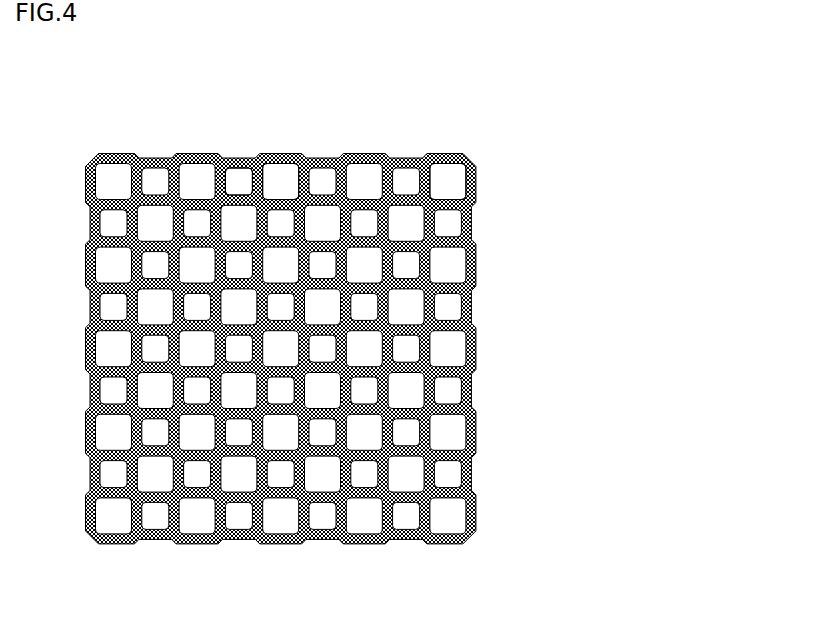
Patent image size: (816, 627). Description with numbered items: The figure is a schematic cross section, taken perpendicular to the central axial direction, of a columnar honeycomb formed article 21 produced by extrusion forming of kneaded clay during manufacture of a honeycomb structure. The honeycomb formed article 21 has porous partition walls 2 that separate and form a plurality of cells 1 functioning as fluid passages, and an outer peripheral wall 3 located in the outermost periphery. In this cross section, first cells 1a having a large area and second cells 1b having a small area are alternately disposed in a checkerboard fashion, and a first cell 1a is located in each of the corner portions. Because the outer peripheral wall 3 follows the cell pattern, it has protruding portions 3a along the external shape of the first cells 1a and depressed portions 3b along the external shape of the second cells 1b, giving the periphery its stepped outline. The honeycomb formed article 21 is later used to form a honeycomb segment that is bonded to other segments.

The honeycomb formed article 21 is at (595, 98).
The outer peripheral wall 3 is at (360, 155).
The protruding portion 3a is at (477, 262).
The depressed portion 3b is at (473, 392).
The partition wall 2 is at (173, 184).
The cell 1 is at (448, 183).
The first cell 1a is at (282, 180).
The second cell 1b is at (240, 180).